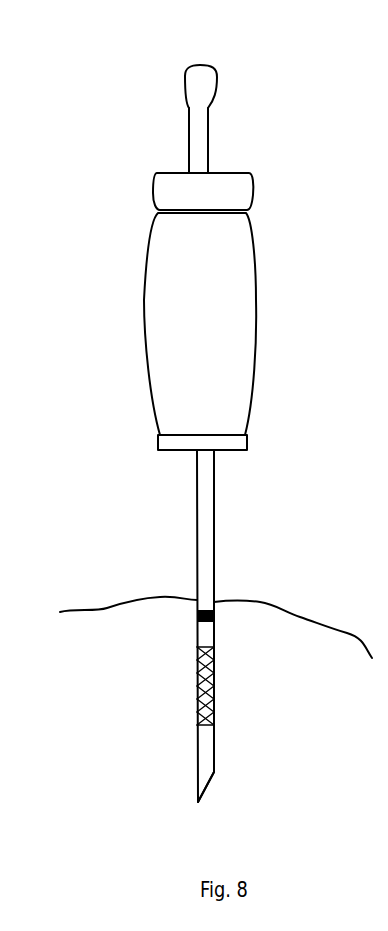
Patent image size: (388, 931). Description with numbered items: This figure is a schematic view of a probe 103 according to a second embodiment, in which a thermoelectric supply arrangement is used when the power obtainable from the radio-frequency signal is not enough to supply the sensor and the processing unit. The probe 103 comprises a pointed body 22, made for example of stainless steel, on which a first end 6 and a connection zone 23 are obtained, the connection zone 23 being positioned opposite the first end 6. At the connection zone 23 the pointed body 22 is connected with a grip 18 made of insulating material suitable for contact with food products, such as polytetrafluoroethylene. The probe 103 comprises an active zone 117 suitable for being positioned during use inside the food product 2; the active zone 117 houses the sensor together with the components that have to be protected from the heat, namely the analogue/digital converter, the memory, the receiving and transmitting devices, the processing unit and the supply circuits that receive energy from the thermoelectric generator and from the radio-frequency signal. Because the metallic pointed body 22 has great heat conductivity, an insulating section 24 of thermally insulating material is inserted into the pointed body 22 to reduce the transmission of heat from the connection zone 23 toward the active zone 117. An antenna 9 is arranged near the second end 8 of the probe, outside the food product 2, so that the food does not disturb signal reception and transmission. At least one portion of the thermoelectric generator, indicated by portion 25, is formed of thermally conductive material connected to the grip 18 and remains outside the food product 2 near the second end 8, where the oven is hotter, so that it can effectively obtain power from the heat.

The food product 2 is at (277, 605).
The probe 103 is at (143, 85).
The antenna 9 is at (217, 80).
The second end 8 is at (210, 133).
The portion of the thermoelectric generator 25 is at (253, 193).
The grip 18 is at (255, 338).
The pointed body 22 is at (205, 526).
The connection zone 23 is at (202, 465).
The insulating section 24 is at (217, 618).
The active zone 117 is at (217, 688).
The first end 6 is at (206, 779).